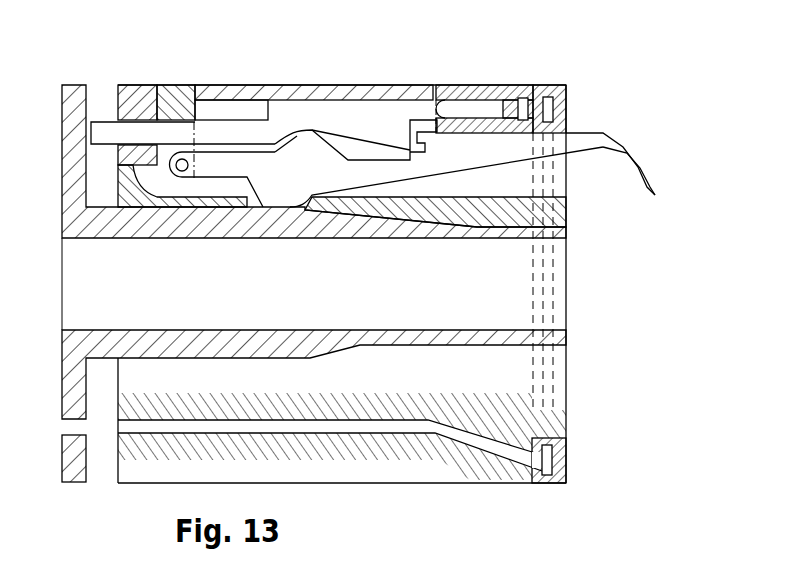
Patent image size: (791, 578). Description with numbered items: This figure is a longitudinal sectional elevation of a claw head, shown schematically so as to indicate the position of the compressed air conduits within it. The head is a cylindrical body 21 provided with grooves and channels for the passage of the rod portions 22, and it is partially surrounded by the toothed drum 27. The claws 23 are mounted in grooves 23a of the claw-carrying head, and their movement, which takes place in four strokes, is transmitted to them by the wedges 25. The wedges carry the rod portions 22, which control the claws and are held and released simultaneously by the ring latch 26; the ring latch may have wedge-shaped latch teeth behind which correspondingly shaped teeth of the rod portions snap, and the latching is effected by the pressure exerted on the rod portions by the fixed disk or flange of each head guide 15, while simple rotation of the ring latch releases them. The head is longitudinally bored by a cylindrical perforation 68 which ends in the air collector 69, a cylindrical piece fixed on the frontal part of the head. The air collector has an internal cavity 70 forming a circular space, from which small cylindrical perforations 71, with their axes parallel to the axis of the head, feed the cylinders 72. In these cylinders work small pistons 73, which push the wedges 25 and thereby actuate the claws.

The head guide 15 is at (62, 97).
The rod portions 22 is at (105, 125).
The ring latch 26 is at (182, 90).
The cylindrical body 21 is at (230, 113).
The toothed drum 27 is at (320, 87).
The wedges 25 is at (353, 120).
The cylinders 72 is at (472, 85).
The small pistons 73 is at (515, 90).
The small cylindrical perforations 71 is at (555, 82).
The claws 23 is at (623, 155).
The grooves 23a is at (520, 178).
The internal cavity 70 is at (567, 452).
The air collector 69 is at (555, 485).
The cylindrical perforation 68 is at (360, 430).